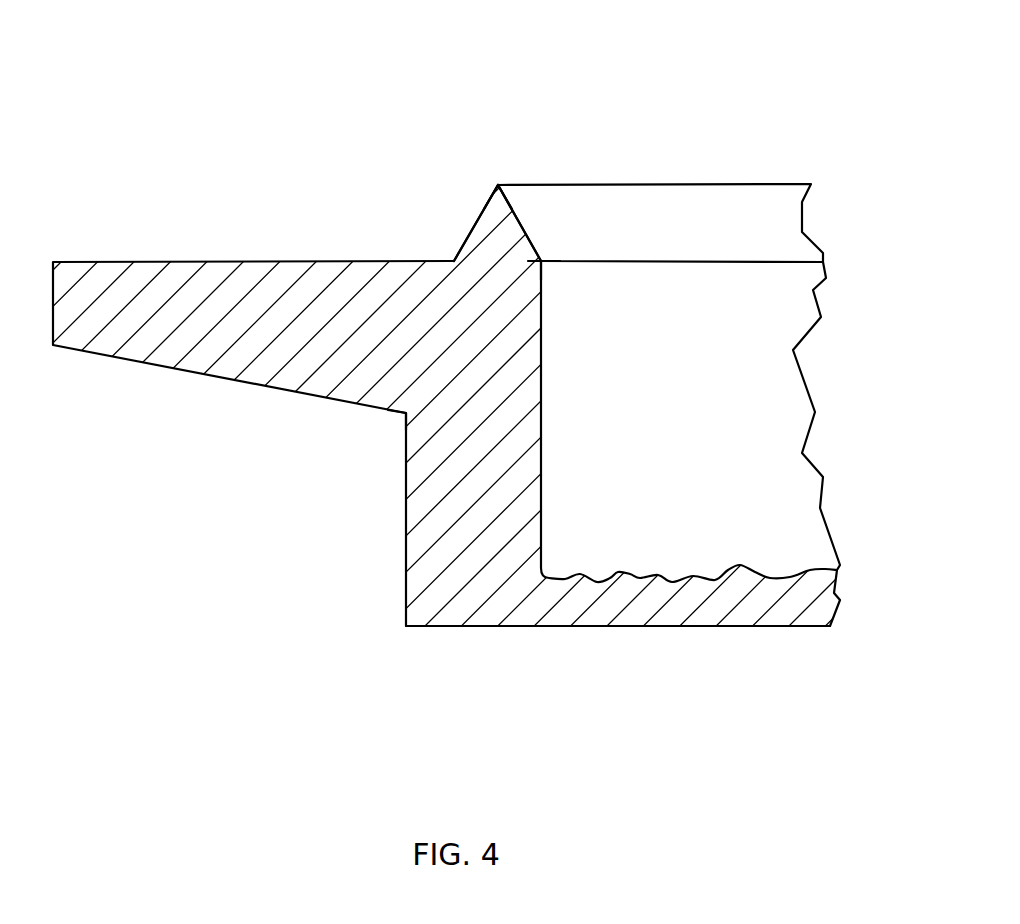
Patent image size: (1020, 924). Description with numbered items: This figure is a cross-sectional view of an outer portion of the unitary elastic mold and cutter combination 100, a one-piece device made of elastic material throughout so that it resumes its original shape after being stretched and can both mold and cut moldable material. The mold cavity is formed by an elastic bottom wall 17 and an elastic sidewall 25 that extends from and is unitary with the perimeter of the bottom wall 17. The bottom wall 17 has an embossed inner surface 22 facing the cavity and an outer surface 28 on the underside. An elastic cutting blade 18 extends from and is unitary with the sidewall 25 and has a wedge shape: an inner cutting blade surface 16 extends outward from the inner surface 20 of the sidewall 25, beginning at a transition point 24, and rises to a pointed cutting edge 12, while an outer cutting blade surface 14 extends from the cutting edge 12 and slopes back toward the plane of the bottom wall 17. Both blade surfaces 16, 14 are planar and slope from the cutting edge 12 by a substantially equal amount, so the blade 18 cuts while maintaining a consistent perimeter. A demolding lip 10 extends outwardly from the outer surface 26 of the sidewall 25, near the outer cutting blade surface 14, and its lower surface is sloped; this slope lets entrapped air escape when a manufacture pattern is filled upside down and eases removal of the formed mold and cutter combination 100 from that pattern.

The unitary elastic mold and cutter combination 100 is at (716, 112).
The demolding lip 10 is at (185, 325).
The cutting edge 12 is at (498, 183).
The outer cutting blade surface 14 is at (467, 238).
The inner cutting blade surface 16 is at (523, 227).
The elastic cutting blade 18 is at (492, 223).
The transition point 24 is at (543, 261).
The inner surface 20 is at (542, 462).
The embossed inner surface 22 is at (640, 577).
The elastic bottom wall 17 is at (748, 598).
The elastic sidewall 25 is at (468, 383).
The outer surface 26 is at (405, 521).
The outer surface 28 is at (693, 627).